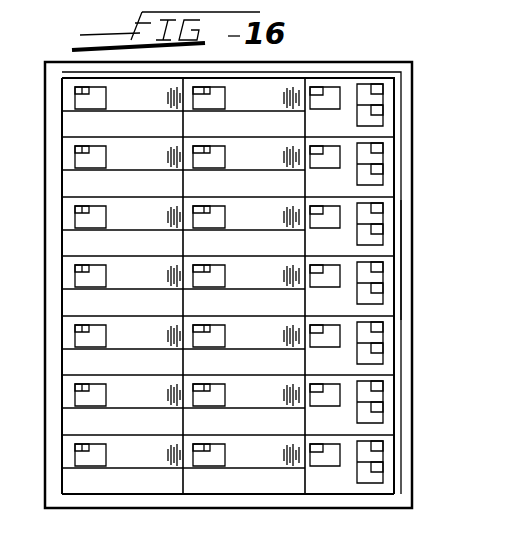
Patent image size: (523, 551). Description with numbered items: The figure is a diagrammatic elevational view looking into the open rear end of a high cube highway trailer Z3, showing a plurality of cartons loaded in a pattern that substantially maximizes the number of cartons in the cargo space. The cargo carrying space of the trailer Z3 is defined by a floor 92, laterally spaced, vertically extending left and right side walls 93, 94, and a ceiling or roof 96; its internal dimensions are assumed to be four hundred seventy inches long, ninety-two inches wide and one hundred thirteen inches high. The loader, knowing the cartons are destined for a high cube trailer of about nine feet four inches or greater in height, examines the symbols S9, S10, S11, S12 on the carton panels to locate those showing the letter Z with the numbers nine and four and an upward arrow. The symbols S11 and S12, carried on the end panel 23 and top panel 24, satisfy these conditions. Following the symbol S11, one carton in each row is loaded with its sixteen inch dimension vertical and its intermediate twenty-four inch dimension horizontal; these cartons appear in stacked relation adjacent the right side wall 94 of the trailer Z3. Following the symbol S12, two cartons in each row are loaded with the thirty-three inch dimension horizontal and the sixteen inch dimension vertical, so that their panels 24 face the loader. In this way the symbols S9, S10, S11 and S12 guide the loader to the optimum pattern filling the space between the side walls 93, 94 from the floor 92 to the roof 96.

The end panel 23 is at (340, 490).
The top panel 24 is at (265, 464).
The floor 92 is at (257, 498).
The left side wall 93 is at (55, 289).
The right side wall 94 is at (407, 287).
The ceiling or roof 96 is at (313, 68).
The symbol S9 is at (384, 452).
The symbol S10 is at (384, 476).
The symbol S11 is at (308, 470).
The symbol S12 is at (214, 471).
The high cube highway trailer Z3 is at (359, 62).